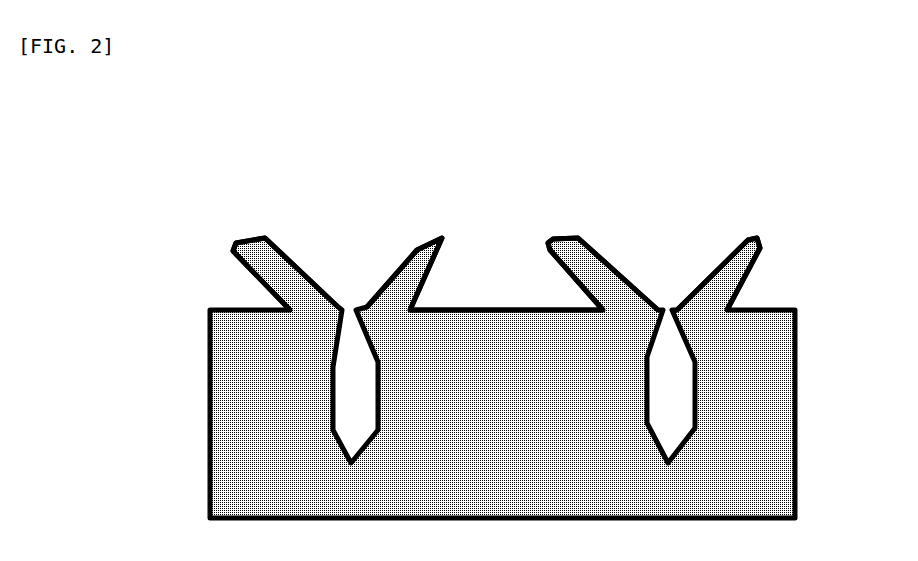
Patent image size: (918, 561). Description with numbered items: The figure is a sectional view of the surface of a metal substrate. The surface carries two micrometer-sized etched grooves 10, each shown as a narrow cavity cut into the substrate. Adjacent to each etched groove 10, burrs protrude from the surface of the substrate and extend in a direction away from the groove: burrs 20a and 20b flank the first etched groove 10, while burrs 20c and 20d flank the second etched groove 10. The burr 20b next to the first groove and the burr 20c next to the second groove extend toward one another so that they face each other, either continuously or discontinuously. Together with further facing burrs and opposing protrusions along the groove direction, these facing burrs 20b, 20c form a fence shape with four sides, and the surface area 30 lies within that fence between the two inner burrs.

The etched grooves 10 is at (333, 415).
The burr 20a is at (235, 249).
The burr 20b is at (418, 251).
The burr 20c is at (605, 258).
The burr 20d is at (762, 257).
The surface area 30 is at (487, 290).